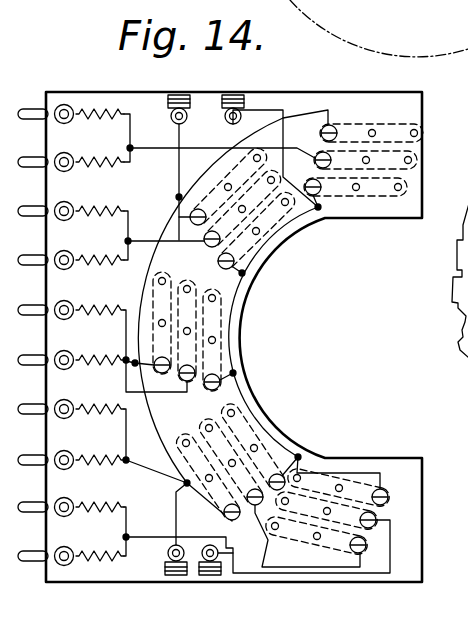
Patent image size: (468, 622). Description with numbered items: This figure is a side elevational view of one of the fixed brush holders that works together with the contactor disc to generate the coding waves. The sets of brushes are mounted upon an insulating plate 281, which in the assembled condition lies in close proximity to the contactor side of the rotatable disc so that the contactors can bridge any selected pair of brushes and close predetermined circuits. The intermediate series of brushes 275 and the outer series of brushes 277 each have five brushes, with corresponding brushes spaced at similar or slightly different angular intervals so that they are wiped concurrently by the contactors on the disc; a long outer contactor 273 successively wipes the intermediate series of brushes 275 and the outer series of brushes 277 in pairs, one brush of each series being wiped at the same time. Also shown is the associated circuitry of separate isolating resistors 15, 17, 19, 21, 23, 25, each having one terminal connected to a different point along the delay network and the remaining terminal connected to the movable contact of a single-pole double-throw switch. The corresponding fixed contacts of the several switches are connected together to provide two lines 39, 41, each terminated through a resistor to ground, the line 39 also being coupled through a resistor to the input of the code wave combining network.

The isolating resistor 15 is at (112, 121).
The isolating resistor 17 is at (84, 218).
The isolating resistor 19 is at (86, 316).
The isolating resistor 21 is at (86, 168).
The isolating resistor 23 is at (86, 366).
The isolating resistor 25 is at (116, 266).
The line 39 is at (156, 592).
The line 41 is at (262, 110).
The long outer contactor 273 is at (466, 312).
The intermediate series of brushes 275 is at (388, 497).
The outer series of brushes 277 is at (366, 545).
The insulating plate 281 is at (423, 574).